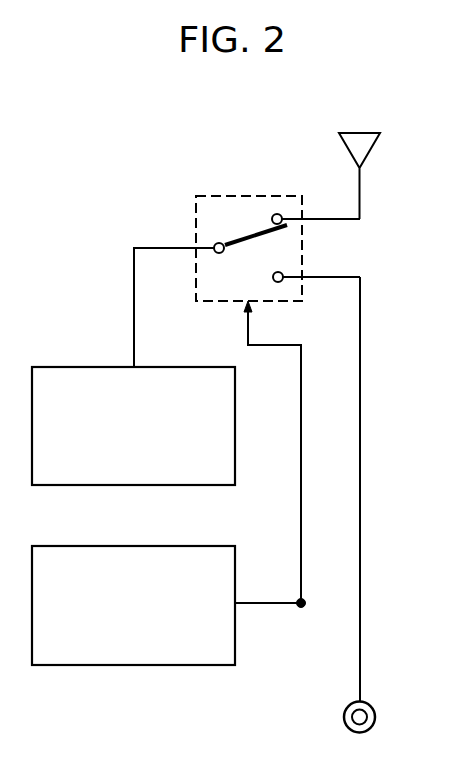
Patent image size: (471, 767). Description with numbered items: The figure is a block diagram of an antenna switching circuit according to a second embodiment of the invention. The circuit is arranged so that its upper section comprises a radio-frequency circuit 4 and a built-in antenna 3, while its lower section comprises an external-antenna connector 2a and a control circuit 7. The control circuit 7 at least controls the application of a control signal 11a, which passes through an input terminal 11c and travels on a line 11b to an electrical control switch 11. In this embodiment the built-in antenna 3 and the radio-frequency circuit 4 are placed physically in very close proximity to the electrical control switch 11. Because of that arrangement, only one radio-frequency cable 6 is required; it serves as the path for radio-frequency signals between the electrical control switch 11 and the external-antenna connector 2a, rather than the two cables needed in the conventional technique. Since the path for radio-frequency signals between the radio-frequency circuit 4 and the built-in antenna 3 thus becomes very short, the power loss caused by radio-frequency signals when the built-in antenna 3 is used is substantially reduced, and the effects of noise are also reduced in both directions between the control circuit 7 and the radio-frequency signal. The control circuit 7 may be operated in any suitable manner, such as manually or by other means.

The external-antenna connector 2a is at (375, 712).
The built-in antenna 3 is at (366, 148).
The radio-frequency circuit 4 is at (73, 382).
The radio-frequency cable 6 is at (360, 428).
The control circuit 7 is at (64, 642).
The electrical control switch 11 is at (233, 196).
The control signal 11a is at (290, 360).
The line 11b is at (301, 512).
The input terminal 11c is at (301, 607).